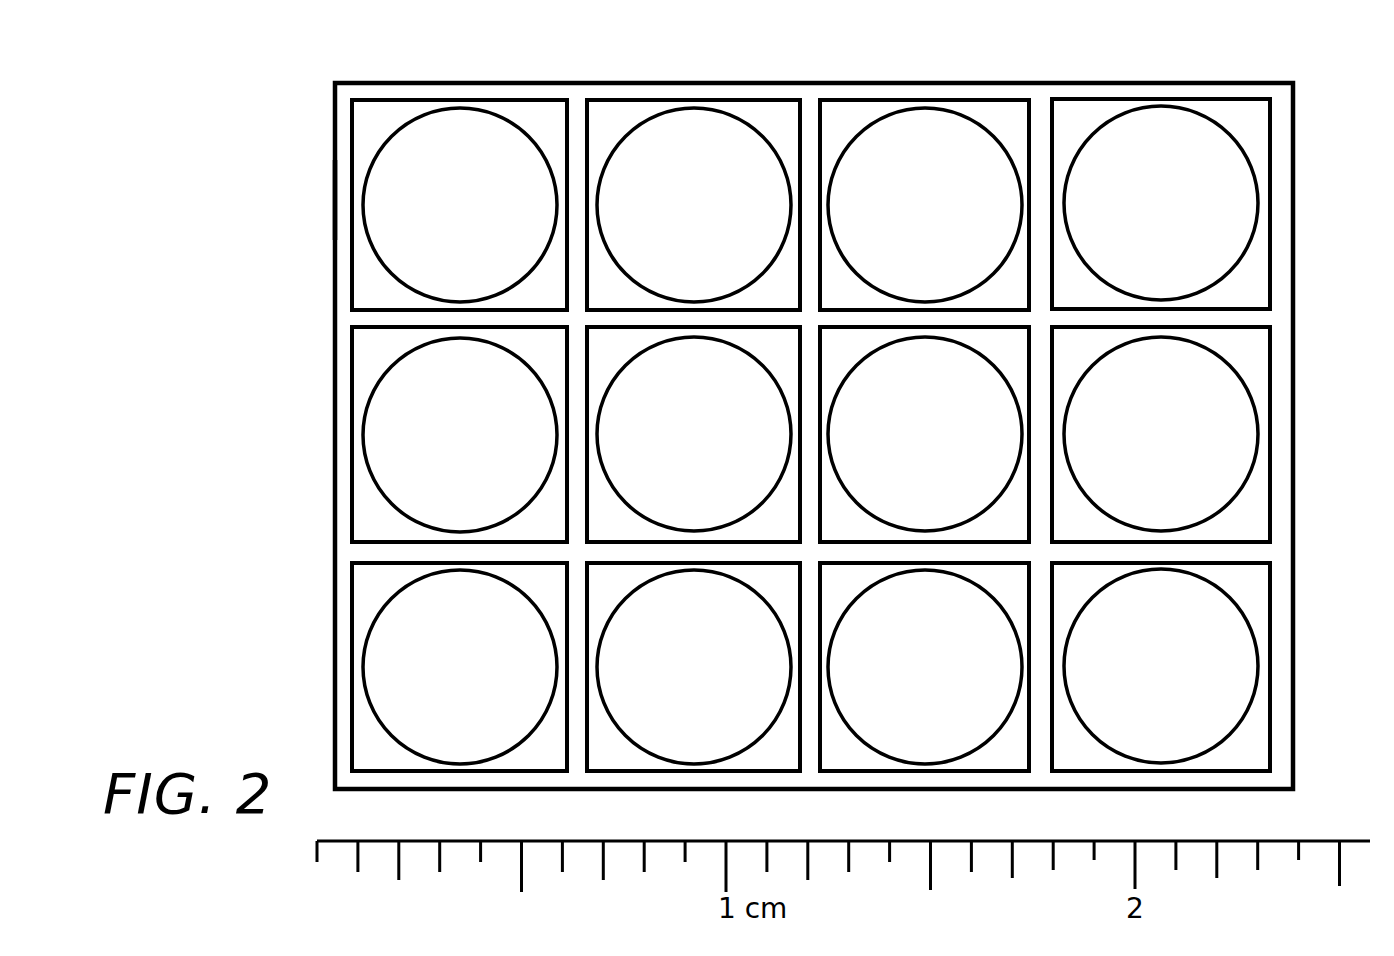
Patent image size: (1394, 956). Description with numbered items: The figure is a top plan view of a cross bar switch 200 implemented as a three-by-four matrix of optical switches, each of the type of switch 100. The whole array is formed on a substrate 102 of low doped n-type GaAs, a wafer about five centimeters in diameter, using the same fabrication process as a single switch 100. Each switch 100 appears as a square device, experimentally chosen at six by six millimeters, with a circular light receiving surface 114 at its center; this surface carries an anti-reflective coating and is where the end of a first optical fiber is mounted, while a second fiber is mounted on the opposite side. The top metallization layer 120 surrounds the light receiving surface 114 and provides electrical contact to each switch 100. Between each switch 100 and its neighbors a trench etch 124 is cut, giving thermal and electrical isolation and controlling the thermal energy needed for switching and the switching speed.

The switch 100 is at (407, 100).
The substrate 102 is at (346, 201).
The light receiving surface 114 is at (440, 216).
The top metallization layer 120 is at (525, 118).
The trench etch 124 is at (582, 115).
The cross bar switch 200 is at (336, 409).